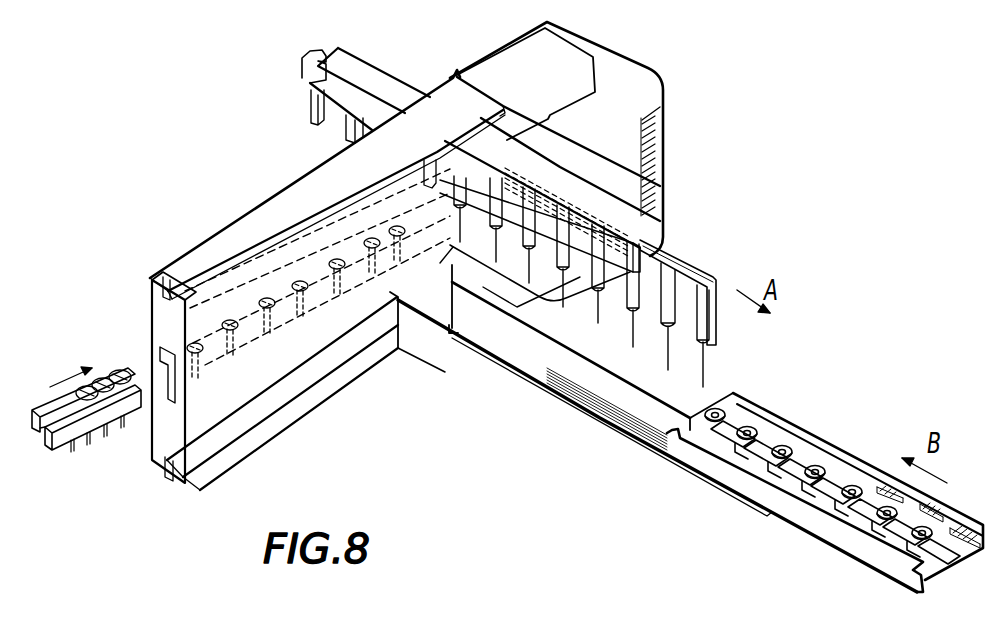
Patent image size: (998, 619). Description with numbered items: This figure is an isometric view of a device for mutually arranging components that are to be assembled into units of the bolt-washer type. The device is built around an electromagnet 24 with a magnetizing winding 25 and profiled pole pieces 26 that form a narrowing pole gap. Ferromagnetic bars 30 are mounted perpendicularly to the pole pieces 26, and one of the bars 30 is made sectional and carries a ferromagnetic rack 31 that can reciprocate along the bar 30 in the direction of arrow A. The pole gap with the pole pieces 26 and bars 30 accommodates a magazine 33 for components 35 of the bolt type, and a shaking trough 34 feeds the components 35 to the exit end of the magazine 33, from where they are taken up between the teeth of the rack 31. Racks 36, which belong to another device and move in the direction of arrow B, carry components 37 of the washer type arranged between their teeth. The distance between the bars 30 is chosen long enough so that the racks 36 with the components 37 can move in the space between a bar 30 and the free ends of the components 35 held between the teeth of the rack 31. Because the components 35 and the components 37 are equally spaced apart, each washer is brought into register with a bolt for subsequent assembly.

The electromagnet 24 is at (674, 84).
The magnetizing winding 25 is at (661, 137).
The profiled pole pieces 26 is at (275, 208).
The ferromagnetic bars 30 is at (388, 83).
The ferromagnetic rack 31 is at (680, 263).
The magazine 33 is at (157, 306).
The shaking trough 34 is at (71, 433).
The components of the bolt type 35 is at (703, 355).
The racks 36 is at (920, 573).
The components of the washer type 37 is at (752, 426).